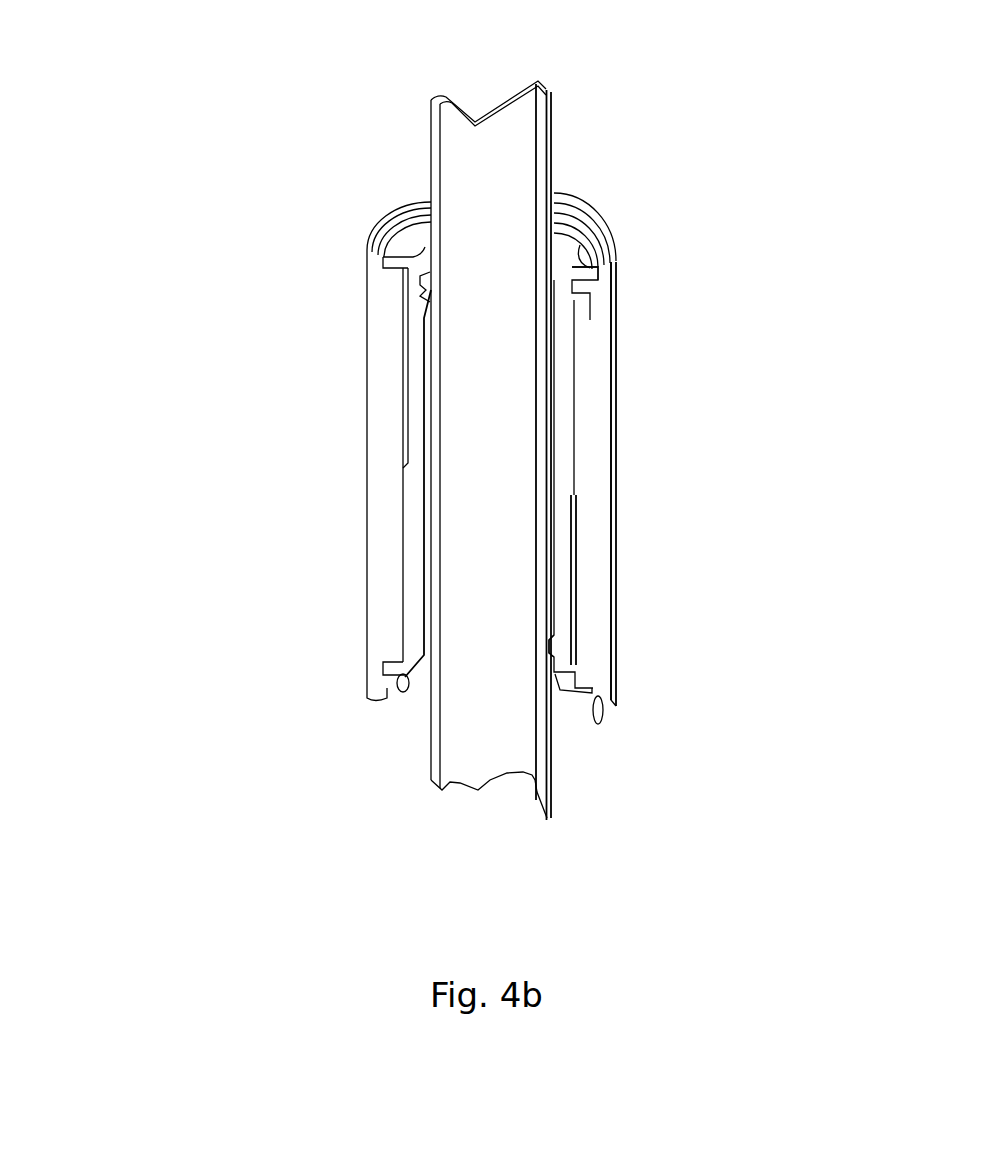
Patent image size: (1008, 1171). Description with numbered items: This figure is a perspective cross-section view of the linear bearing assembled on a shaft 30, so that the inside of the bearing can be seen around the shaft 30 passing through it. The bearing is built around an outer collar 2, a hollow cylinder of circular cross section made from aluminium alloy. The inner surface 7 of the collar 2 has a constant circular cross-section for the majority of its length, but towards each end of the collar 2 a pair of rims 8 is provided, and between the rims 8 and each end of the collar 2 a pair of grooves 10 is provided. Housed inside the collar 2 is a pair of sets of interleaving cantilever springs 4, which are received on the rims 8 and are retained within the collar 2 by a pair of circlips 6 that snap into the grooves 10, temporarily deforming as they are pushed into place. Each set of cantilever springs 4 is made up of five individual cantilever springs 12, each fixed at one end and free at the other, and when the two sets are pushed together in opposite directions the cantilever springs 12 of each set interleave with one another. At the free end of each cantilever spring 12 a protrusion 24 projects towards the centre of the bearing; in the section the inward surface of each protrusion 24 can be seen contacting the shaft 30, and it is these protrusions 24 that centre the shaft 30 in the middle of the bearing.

The outer collar 2 is at (390, 372).
The set of interleaving cantilever springs 4 is at (427, 207).
The circlip 6 is at (580, 245).
The inner surface 7 is at (402, 407).
The rim 8 is at (592, 302).
The groove 10 is at (378, 242).
The cantilever spring 12 is at (415, 432).
The protrusion 24 is at (427, 302).
The shaft 30 is at (498, 170).